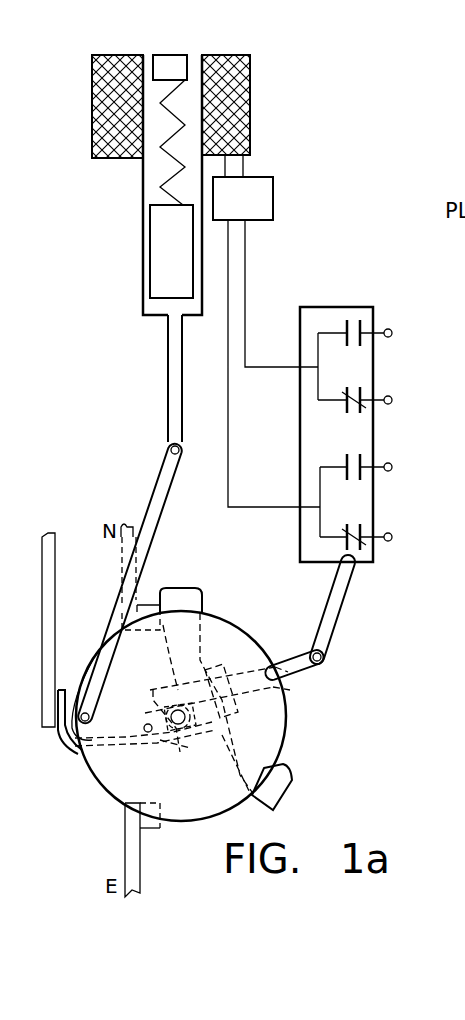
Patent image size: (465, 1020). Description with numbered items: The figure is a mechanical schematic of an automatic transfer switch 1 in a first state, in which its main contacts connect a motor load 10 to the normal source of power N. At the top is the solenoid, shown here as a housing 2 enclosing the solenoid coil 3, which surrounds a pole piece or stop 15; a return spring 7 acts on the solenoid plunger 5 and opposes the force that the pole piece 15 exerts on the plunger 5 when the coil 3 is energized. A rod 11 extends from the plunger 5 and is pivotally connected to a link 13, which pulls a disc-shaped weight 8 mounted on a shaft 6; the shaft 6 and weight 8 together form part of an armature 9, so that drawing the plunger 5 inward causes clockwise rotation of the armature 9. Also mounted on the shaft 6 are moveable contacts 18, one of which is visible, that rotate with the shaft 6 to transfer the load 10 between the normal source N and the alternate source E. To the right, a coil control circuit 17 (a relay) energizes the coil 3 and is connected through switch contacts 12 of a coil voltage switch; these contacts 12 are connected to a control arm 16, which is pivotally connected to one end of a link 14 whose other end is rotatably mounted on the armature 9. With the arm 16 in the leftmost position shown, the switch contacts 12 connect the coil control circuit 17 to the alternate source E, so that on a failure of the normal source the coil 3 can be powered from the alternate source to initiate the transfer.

The automatic transfer switch 1 is at (300, 80).
The electromagnet housing 2 is at (143, 228).
The solenoid coil 3 is at (92, 100).
The solenoid plunger 5 is at (160, 278).
The shaft 6 is at (172, 684).
The return spring 7 is at (146, 177).
The disc-shaped weight 8 is at (233, 622).
The armature 9 is at (285, 746).
The motor load 10 is at (46, 592).
The rod 11 is at (168, 370).
The switch contacts 12 is at (300, 428).
The link 13 is at (150, 485).
The link 14 is at (297, 680).
The pole piece 15 is at (165, 62).
The control arm 16 is at (344, 622).
The coil control circuit 17 is at (268, 208).
The moveable contacts 18 is at (288, 796).